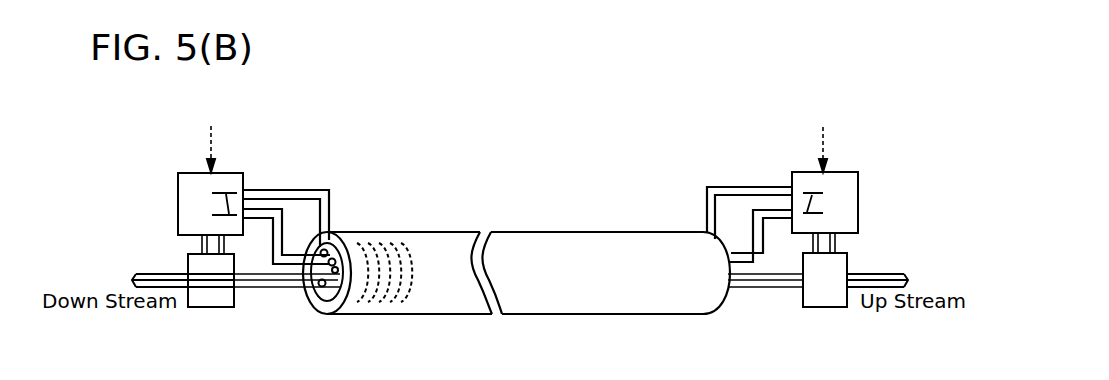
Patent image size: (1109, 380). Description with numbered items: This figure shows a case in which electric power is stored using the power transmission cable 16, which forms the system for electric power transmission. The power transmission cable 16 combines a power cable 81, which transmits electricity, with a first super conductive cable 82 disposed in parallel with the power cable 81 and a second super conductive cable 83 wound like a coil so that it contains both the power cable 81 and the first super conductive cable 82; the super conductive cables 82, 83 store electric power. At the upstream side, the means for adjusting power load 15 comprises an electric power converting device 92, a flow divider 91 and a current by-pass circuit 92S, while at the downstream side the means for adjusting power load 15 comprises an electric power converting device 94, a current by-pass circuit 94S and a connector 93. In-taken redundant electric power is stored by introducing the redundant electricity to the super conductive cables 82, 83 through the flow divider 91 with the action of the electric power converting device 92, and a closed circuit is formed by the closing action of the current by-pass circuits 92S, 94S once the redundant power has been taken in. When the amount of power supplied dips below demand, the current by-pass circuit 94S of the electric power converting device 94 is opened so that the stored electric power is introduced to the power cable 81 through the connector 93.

The means for adjusting power load 15 is at (523, 201).
The power transmission cable 16 is at (466, 231).
The power cable 81 is at (333, 300).
The first super conductive cable 82 is at (347, 252).
The second super conductive cable 83 is at (337, 246).
The flow divider 91 is at (847, 258).
The electric power converting device 92 is at (843, 172).
The current by-pass circuit 92S is at (822, 200).
The connector 93 is at (188, 263).
The electric power converting device 94 is at (234, 172).
The current by-pass circuit 94S is at (216, 205).